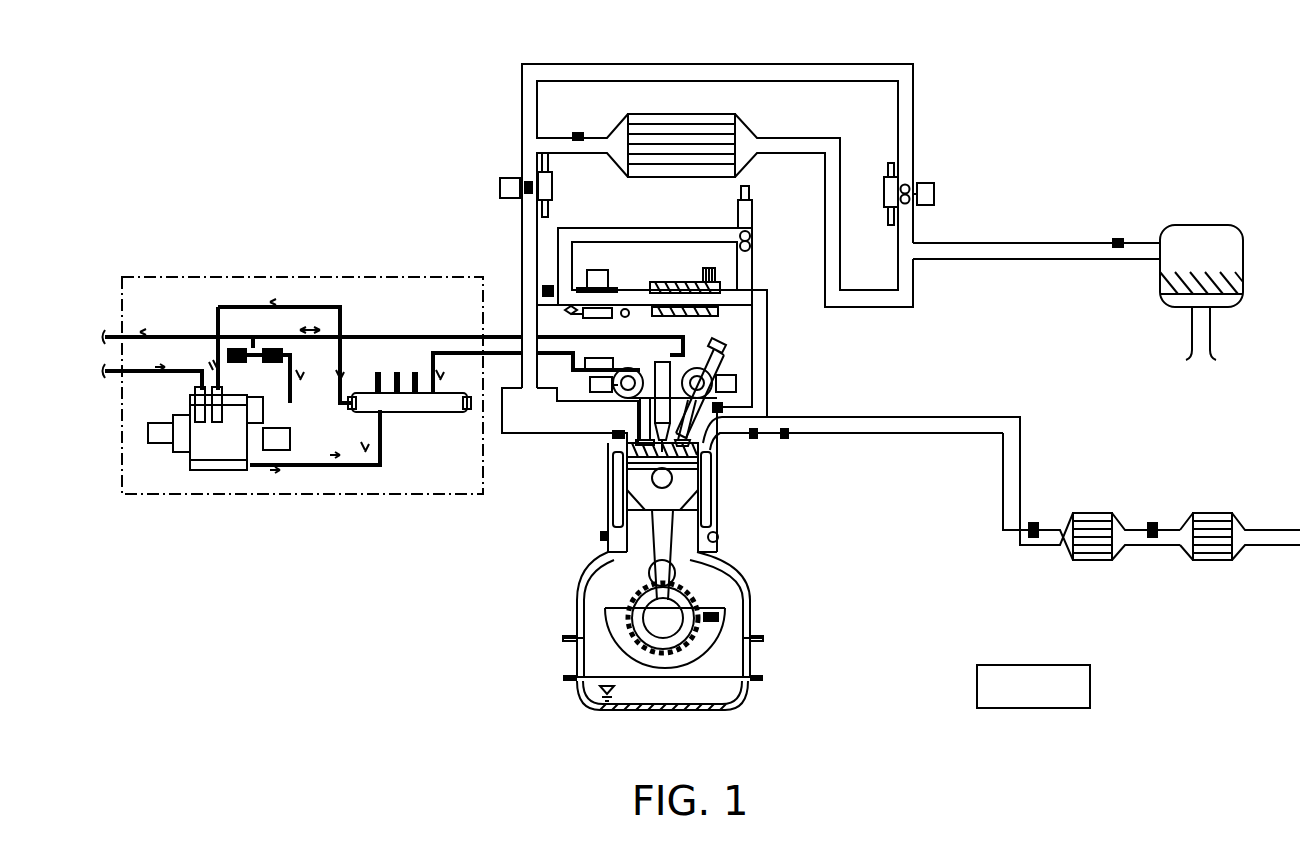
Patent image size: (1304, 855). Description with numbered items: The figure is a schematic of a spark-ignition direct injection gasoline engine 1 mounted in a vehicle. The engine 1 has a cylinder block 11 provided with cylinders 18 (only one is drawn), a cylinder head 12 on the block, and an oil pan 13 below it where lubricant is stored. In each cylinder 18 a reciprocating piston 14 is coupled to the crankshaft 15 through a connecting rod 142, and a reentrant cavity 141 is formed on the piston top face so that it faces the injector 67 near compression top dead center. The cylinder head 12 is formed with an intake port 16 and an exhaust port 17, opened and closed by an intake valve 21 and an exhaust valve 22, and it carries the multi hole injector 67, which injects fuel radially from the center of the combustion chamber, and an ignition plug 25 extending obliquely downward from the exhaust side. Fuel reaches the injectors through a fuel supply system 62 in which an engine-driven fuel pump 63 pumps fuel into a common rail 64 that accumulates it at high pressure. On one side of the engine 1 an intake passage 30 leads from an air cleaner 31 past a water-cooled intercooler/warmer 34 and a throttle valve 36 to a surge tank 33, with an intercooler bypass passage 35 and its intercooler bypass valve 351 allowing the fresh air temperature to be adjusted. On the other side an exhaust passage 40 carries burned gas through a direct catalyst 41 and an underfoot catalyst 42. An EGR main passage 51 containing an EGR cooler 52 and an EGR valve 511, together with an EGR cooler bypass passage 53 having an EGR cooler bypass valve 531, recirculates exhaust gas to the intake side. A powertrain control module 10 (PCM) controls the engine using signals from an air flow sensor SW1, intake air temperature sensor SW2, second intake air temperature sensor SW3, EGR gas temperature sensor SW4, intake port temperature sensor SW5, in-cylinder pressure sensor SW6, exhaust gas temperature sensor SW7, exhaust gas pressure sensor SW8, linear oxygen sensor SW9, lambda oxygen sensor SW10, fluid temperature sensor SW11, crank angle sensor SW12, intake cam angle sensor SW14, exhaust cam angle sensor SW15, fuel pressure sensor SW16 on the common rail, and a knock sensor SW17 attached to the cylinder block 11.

The engine 1 is at (1030, 62).
The powertrain control module 10 is at (1092, 686).
The cylinder block 11 is at (730, 545).
The cylinder head 12 is at (725, 455).
The oil pan 13 is at (748, 690).
The piston 14 is at (612, 510).
The cavity 141 is at (718, 537).
The connecting rod 142 is at (640, 572).
The crankshaft 15 is at (662, 630).
The intake port 16 is at (592, 428).
The exhaust port 17 is at (733, 432).
The cylinder 18 is at (612, 550).
The intake valve 21 is at (627, 487).
The exhaust valve 22 is at (700, 495).
The ignition plug 25 is at (722, 368).
The intake passage 30 is at (522, 228).
The air cleaner 31 is at (1212, 225).
The surge tank 33 is at (518, 425).
The intercooler/warmer 34 is at (712, 114).
The intercooler bypass passage 35 is at (862, 62).
The intercooler bypass valve 351 is at (928, 183).
The throttle valve 36 is at (505, 178).
The exhaust passage 40 is at (935, 417).
The direct catalyst 41 is at (1092, 513).
The underfoot catalyst 42 is at (1212, 513).
The main passage 51 is at (745, 306).
The EGR valve 511 is at (598, 270).
The EGR cooler 52 is at (692, 280).
The EGR cooler bypass passage 53 is at (645, 228).
The EGR cooler bypass valve 531 is at (752, 218).
The fuel supply system 62 is at (222, 277).
The fuel pump 63 is at (212, 470).
The common rail 64 is at (403, 412).
The injector 67 is at (660, 360).
The air flow sensor SW1 is at (1132, 216).
The intake air temperature sensor SW2 is at (1118, 238).
The second intake air temperature sensor SW3 is at (578, 132).
The EGR gas temperature sensor SW4 is at (545, 287).
The intake port temperature sensor SW5 is at (614, 437).
The in-cylinder pressure sensor SW6 is at (660, 362).
The exhaust gas temperature sensor SW7 is at (753, 439).
The exhaust gas pressure sensor SW8 is at (784, 439).
The linear O2 sensor SW9 is at (1033, 522).
The lambda O2 sensor SW10 is at (1152, 522).
The fluid temperature sensor SW11 is at (723, 407).
The crank angle sensor SW12 is at (720, 617).
The intake cam angle sensor SW14 is at (590, 385).
The exhaust cam angle sensor SW15 is at (738, 383).
The fuel pressure sensor SW16 is at (458, 412).
The knock sensor SW17 is at (600, 536).